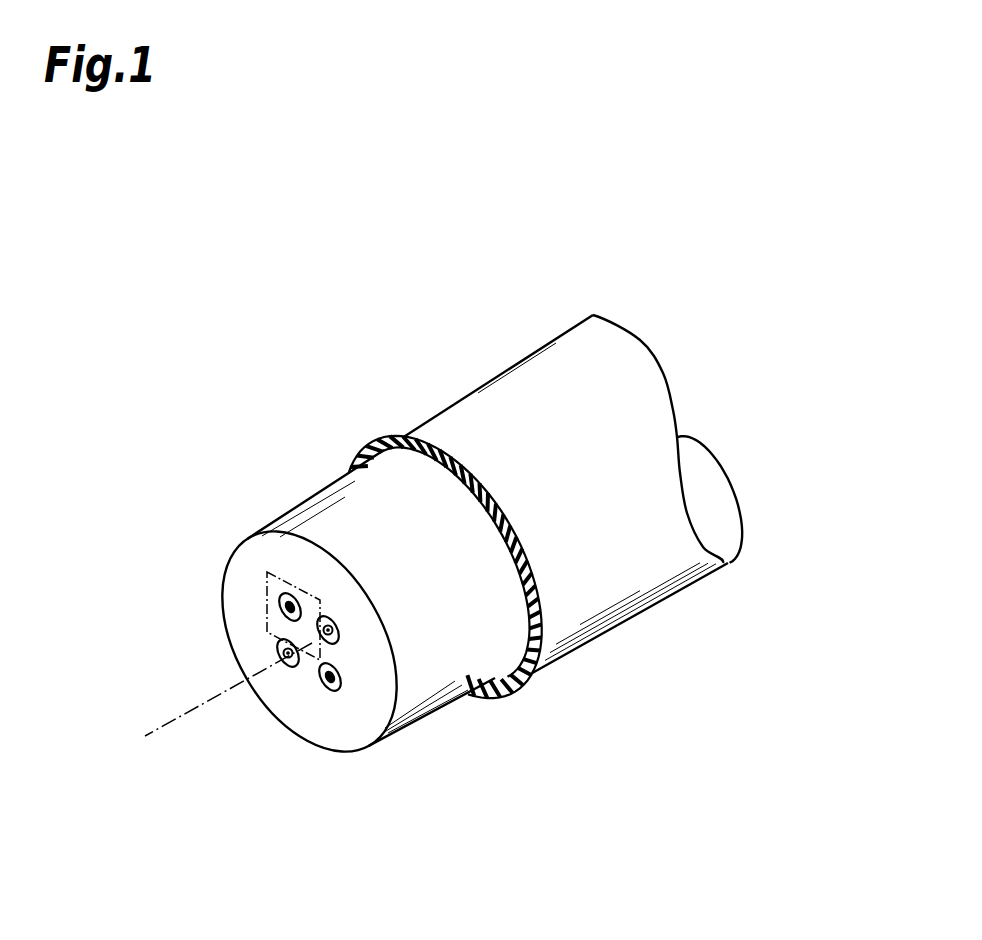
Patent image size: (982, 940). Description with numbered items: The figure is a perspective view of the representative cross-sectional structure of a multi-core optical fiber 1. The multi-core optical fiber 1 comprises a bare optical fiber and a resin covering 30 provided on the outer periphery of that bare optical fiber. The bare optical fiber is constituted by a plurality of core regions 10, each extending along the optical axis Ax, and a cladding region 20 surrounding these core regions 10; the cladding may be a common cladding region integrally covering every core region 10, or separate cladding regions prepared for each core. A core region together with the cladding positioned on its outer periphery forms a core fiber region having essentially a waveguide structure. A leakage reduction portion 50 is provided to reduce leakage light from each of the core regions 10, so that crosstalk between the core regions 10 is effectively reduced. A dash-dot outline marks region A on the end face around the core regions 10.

The multi-core optical fiber 1 is at (275, 416).
The core region 10 is at (338, 641).
The cladding region 20 is at (246, 565).
The resin covering 30 is at (374, 458).
The leakage reduction portion 50 is at (272, 597).
The region A is at (263, 624).
The optical axis Ax is at (152, 735).